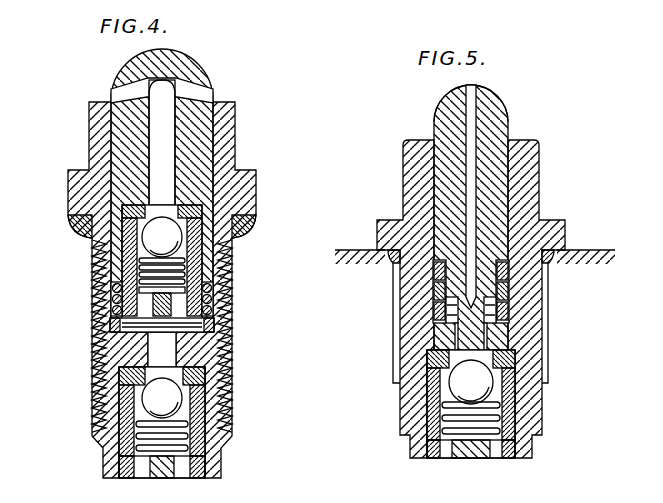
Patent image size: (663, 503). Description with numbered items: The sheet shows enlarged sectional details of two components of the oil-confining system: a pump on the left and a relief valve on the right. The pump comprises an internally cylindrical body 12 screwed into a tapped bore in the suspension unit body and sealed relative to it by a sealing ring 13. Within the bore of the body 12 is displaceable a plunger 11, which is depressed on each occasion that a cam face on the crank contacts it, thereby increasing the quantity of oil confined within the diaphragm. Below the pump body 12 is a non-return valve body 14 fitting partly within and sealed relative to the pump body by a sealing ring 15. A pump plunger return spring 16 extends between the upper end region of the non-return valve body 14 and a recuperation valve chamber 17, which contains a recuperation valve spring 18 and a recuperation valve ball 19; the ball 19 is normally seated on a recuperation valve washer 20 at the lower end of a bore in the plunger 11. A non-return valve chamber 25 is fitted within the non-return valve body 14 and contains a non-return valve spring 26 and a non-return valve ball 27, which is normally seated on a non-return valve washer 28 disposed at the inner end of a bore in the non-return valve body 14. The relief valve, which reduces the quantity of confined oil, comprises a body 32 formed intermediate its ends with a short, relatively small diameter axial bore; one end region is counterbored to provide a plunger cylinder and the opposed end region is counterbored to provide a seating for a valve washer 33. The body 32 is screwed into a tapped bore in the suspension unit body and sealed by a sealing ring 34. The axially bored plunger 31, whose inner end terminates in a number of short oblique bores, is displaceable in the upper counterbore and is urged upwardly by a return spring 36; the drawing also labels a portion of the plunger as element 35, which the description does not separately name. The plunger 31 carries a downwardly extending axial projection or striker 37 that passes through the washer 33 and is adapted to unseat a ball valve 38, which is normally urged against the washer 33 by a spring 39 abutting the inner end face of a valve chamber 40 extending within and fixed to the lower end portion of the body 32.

In FIG. 4, the plunger 11 is at (165, 58).
In FIG. 4, the internally cylindrical body 12 is at (232, 128).
In FIG. 4, the sealing ring 13 is at (237, 222).
In FIG. 4, the non-return valve body 14 is at (205, 357).
In FIG. 4, the sealing ring 15 is at (226, 402).
In FIG. 4, the pump plunger return spring 16 is at (208, 305).
In FIG. 4, the recuperation valve chamber 17 is at (207, 292).
In FIG. 4, the recuperation valve spring 18 is at (162, 276).
In FIG. 4, the recuperation valve ball 19 is at (160, 237).
In FIG. 4, the recuperation valve washer 20 is at (205, 208).
In FIG. 4, the non-return valve chamber 25 is at (220, 470).
In FIG. 4, the non-return valve spring 26 is at (183, 440).
In FIG. 4, the non-return valve ball 27 is at (150, 400).
In FIG. 4, the non-return valve washer 28 is at (205, 380).
In FIG. 5, the plunger 31 is at (483, 97).
In FIG. 5, the body 32 is at (536, 162).
In FIG. 5, the valve washer 33 is at (497, 356).
In FIG. 5, the sealing ring 34 is at (556, 252).
In FIG. 5, the stem 35 is at (440, 175).
In FIG. 5, the return spring 36 is at (437, 290).
In FIG. 5, the striker 37 is at (470, 334).
In FIG. 5, the ball valve 38 is at (476, 383).
In FIG. 5, the spring 39 is at (438, 425).
In FIG. 5, the valve chamber 40 is at (512, 455).